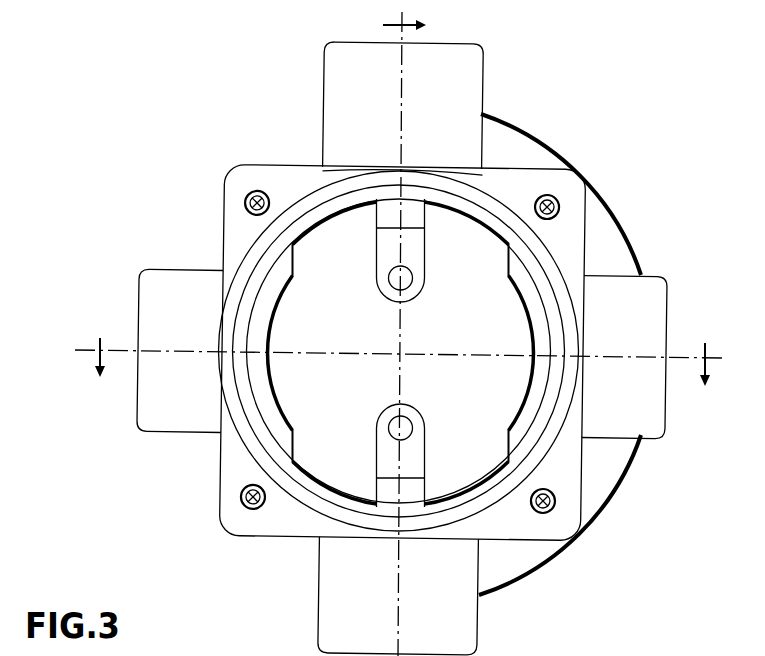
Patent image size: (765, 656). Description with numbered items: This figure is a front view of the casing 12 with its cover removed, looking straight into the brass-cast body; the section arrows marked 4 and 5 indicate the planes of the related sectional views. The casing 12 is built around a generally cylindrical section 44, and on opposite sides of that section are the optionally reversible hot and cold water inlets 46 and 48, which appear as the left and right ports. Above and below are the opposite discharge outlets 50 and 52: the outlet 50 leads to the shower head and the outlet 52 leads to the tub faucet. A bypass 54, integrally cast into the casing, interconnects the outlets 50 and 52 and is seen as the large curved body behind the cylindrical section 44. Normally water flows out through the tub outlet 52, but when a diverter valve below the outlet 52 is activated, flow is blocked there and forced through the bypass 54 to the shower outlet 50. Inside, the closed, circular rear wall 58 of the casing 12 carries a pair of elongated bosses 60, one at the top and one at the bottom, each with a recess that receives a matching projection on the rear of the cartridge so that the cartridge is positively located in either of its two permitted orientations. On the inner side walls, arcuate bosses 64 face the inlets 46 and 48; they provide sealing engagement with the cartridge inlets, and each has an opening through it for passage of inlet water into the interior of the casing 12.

The casing 12 is at (164, 452).
The section line 4- 4 is at (412, 27).
The section line 5- 5 is at (401, 381).
The generally cylindrical section 44 is at (318, 187).
The hot water inlet 46 is at (638, 442).
The cold water inlet 48 is at (153, 287).
The shower discharge outlet 50 is at (457, 67).
The tub discharge outlet 52 is at (357, 578).
The bypass 54 is at (521, 572).
The closed circular rear wall 58 is at (340, 329).
The elongated bosses 60 is at (413, 243).
The arcuate bosses 64 is at (532, 300).